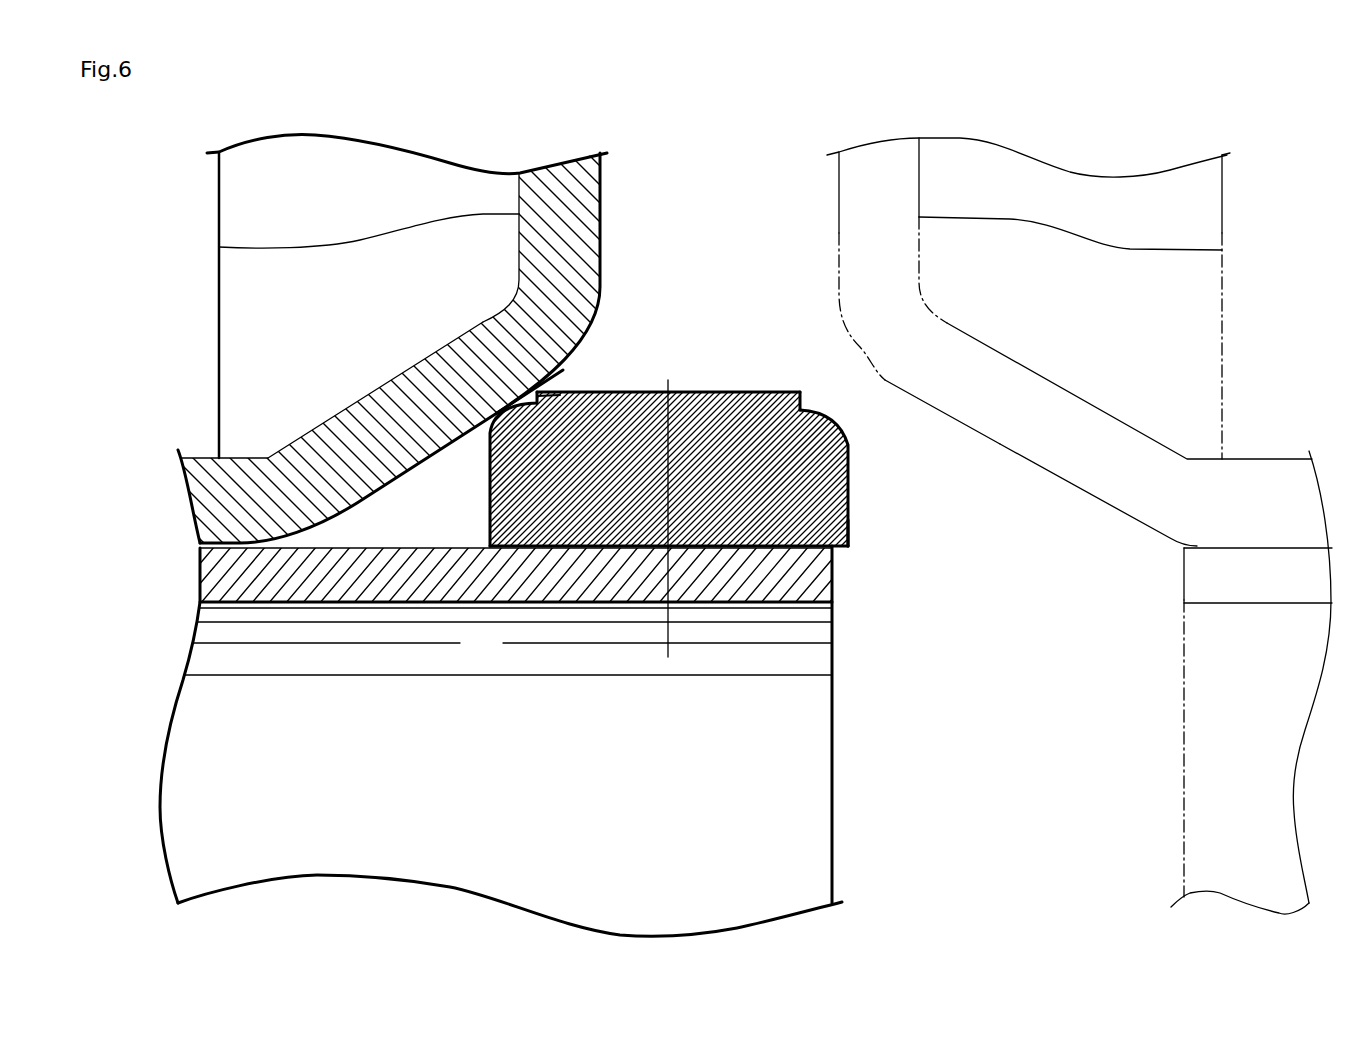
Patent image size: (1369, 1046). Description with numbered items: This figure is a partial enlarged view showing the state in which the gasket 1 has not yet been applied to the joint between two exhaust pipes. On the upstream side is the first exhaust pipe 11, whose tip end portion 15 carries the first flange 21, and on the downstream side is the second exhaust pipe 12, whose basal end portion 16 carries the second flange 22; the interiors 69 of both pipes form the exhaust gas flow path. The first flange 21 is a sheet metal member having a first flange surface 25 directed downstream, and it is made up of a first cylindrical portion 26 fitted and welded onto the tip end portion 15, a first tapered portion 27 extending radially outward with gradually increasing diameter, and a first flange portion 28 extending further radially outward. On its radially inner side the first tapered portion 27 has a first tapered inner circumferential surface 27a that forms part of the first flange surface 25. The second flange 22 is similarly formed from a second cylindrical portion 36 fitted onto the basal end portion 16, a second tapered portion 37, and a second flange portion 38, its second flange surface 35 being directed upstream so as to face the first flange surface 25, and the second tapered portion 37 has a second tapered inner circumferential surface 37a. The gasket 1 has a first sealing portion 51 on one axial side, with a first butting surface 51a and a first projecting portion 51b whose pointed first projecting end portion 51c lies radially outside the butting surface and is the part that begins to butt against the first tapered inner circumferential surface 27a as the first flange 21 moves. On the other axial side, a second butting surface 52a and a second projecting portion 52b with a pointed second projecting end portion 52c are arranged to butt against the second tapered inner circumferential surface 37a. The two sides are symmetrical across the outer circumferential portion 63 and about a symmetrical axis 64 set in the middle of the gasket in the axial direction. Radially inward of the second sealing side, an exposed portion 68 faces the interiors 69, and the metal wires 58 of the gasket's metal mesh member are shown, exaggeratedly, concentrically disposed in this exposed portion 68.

The gasket 1 is at (861, 568).
The first exhaust pipe 11 is at (832, 812).
The second exhaust pipe 12 is at (1184, 822).
The tip end portion 15 is at (496, 604).
The basal end portion 16 is at (1216, 603).
The first flange 21 is at (191, 187).
The second flange 22 is at (1245, 186).
The first flange surface 25 is at (600, 257).
The first cylindrical portion 26 is at (188, 455).
The first tapered portion 27 is at (337, 417).
The first tapered inner circumferential surface 27a is at (377, 487).
The first flange portion 28 is at (219, 247).
The second flange surface 35 is at (837, 208).
The second cylindrical portion 36 is at (1247, 459).
The second tapered portion 37 is at (1107, 413).
The second tapered inner circumferential surface 37a is at (1058, 483).
The second flange portion 38 is at (1222, 250).
The first sealing portion 51 is at (484, 440).
The first butting surface 51a is at (470, 374).
The first projecting portion 51b is at (560, 390).
The first projecting end portion 51c is at (537, 405).
The second butting surface 52a is at (817, 410).
The second projecting portion 52b is at (773, 390).
The second projecting end portion 52c is at (800, 390).
The metal wires 58 is at (848, 480).
The outer circumferential portion 63 is at (668, 380).
The symmetrical axis 64 is at (668, 630).
The exposed portion 68 is at (850, 525).
The interiors 69 is at (666, 810).